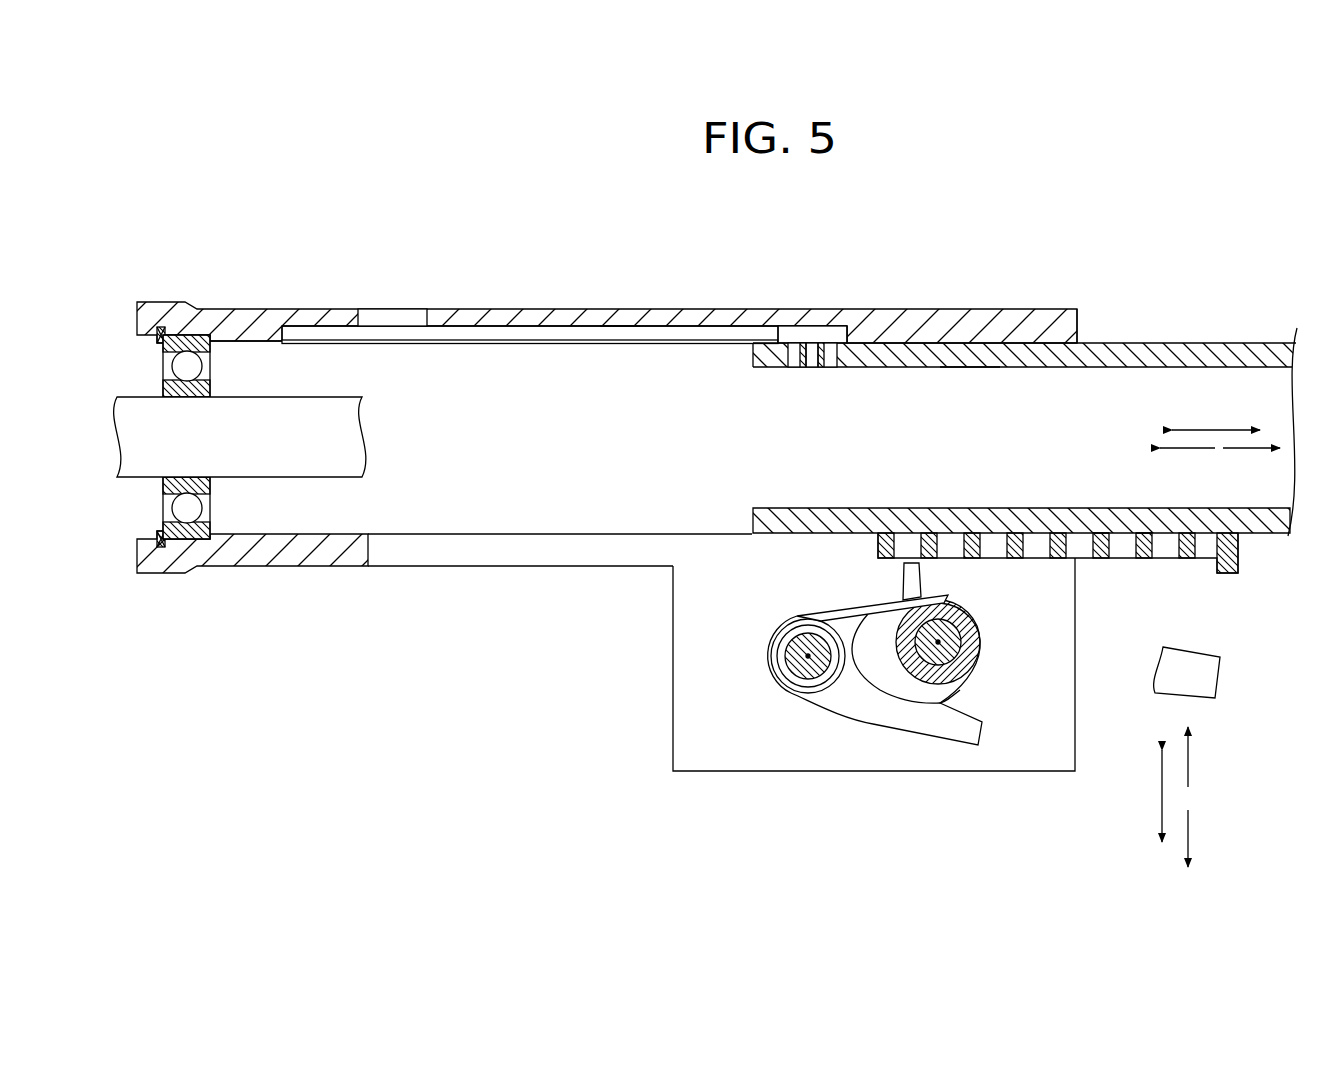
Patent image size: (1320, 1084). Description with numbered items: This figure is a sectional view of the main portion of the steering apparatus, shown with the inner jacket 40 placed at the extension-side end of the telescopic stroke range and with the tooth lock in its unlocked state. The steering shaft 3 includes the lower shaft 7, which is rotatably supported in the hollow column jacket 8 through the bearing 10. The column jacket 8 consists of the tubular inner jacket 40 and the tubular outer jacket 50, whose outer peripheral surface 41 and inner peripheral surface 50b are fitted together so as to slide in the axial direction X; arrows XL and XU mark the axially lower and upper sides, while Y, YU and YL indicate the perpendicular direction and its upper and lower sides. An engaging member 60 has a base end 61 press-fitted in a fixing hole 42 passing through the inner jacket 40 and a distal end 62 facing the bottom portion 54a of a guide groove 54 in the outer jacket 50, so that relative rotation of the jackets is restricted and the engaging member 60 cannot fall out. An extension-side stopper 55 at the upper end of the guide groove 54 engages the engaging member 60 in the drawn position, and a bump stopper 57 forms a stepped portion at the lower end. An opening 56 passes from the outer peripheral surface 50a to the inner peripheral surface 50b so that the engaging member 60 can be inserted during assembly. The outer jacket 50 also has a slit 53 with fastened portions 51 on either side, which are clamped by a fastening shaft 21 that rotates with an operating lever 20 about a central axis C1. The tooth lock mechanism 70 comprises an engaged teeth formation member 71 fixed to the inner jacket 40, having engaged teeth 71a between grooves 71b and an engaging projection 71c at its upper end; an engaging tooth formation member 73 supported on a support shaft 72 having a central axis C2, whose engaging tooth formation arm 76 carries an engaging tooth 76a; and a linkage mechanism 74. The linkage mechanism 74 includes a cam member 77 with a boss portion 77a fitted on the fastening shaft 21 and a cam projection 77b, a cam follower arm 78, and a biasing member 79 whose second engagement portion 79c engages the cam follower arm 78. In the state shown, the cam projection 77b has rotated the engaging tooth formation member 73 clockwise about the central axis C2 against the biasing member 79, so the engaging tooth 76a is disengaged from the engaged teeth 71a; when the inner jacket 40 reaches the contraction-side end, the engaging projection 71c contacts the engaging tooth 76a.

The steering shaft 3 is at (148, 393).
The lower shaft 7 is at (287, 468).
The column jacket 8 is at (917, 287).
The bearing 10 is at (178, 507).
The operating lever 20 is at (1207, 672).
The fastening shaft 21 is at (960, 630).
The inner jacket 40 is at (1197, 343).
The outer peripheral surface 41 is at (1043, 325).
The fixing hole 42 is at (798, 357).
The outer jacket 50 is at (988, 308).
The outer peripheral surface 50a is at (580, 312).
The inner peripheral surface 50b is at (972, 348).
The fastened portions 51 is at (705, 753).
The slit 53 is at (573, 552).
The guide groove 54 is at (518, 343).
The bottom portion 54a is at (622, 328).
The extension-side stopper 55 is at (840, 337).
The opening 56 is at (393, 318).
The bump stopper 57 is at (294, 329).
The engaging member 60 is at (789, 324).
The base end 61 is at (812, 365).
The distal end 62 is at (810, 326).
The tooth lock mechanism 70 is at (878, 670).
The engaged teeth formation member 71 is at (876, 548).
The engaged teeth 71a is at (1092, 528).
The grooves 71b is at (1160, 528).
The engaging projection 71c is at (1228, 574).
The support shaft 72 is at (790, 668).
The engaging tooth formation member 73 is at (778, 627).
The linkage mechanism 74 is at (908, 737).
The engaging tooth formation arm 76 is at (830, 612).
The engaging tooth 76a is at (913, 572).
The cam member 77 is at (955, 712).
The boss portion 77a is at (965, 652).
The cam projection 77b is at (945, 693).
The cam follower arm 78 is at (921, 722).
The biasing member 79 is at (865, 730).
The second engagement portion 79c is at (810, 715).
The central axis C1 is at (938, 642).
The central axis C2 is at (808, 656).
The axial direction X is at (1218, 428).
The axially lower side XL is at (1193, 450).
The axial upper direction XU is at (1252, 450).
The vertical direction Y is at (1160, 795).
The upward direction YU is at (1190, 765).
The downward direction YL is at (1190, 825).